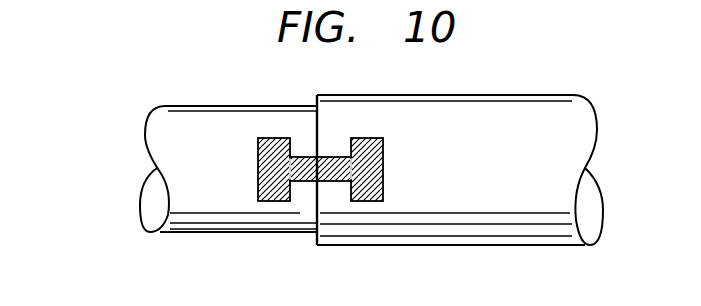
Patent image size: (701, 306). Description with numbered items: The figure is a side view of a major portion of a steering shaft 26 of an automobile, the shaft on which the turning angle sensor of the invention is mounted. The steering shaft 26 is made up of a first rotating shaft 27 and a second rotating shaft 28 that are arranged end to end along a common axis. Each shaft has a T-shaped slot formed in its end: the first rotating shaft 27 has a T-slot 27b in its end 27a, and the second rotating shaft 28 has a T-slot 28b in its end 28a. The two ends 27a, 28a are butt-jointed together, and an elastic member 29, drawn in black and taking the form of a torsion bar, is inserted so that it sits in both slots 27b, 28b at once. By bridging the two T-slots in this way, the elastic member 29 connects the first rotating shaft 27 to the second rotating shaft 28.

The steering shaft 26 is at (365, 177).
The first rotating shaft 27 is at (175, 140).
The end of first rotating shaft 27a is at (318, 130).
The T-slot 27b is at (257, 171).
The second rotating shaft 28 is at (555, 142).
The end of second rotating shaft 28a is at (316, 215).
The T-slot 28b is at (384, 160).
The elastic member 29 is at (337, 183).